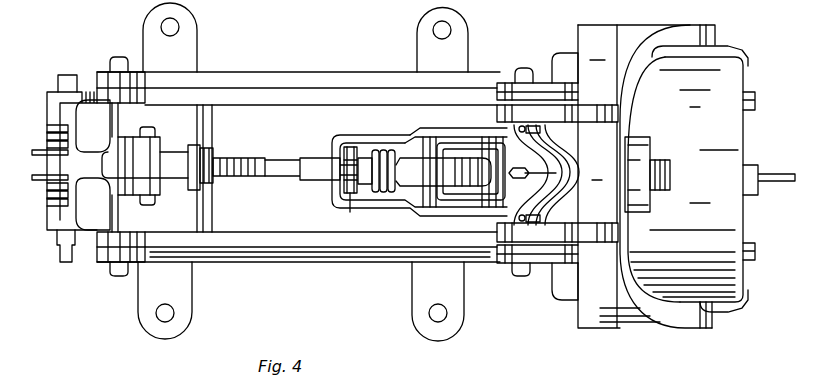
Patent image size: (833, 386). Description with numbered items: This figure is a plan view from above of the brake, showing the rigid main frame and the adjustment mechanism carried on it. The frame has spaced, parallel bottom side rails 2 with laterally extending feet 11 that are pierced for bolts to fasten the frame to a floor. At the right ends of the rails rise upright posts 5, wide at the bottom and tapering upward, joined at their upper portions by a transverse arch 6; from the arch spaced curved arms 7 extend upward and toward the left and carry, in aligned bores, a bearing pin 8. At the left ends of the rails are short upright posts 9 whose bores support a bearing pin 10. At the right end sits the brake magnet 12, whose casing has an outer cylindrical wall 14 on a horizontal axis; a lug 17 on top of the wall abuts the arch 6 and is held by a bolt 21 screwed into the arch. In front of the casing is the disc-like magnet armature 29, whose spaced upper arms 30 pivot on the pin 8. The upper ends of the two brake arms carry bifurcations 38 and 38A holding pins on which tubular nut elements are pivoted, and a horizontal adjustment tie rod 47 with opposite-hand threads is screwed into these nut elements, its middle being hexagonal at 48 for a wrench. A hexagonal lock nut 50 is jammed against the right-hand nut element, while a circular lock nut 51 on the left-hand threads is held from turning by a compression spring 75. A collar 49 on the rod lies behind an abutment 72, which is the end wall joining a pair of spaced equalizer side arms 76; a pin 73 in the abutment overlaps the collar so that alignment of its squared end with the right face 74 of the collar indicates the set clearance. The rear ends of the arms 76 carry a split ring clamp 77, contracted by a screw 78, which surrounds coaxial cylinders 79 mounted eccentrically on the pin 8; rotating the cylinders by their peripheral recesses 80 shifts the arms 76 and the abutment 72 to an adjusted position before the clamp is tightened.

The bottom side rails 2 is at (293, 72).
The upright posts 5 is at (690, 28).
The transverse arch 6 is at (630, 104).
The curved arms 7 is at (592, 113).
The bearing pin 8 is at (518, 272).
The short upright posts 9 is at (97, 70).
The bearing pin 10 is at (118, 57).
The feet 11 is at (197, 30).
The brake magnet 12 is at (755, 216).
The outer cylindrical wall 14 is at (733, 128).
The lug 17 is at (651, 148).
The bolt 21 is at (668, 168).
The magnet armature 29 is at (565, 300).
The spaced arms 30 is at (538, 93).
The bifurcations 38 is at (471, 173).
The bifurcations 38A is at (160, 145).
The adjustment tie rod 47 is at (300, 162).
The hexagonal portion 48 is at (278, 158).
The collar 49 is at (350, 211).
The lock nut 50 is at (210, 158).
The lock nut 51 is at (374, 149).
The abutment 72 is at (337, 175).
The pin 73 is at (350, 147).
The right face 74 is at (375, 150).
The compression spring 75 is at (400, 172).
The side arms 76 is at (462, 136).
The split ring clamp 77 is at (545, 160).
The screw 78 is at (530, 174).
The coaxial cylinders 79 is at (541, 130).
The peripheral recesses 80 is at (522, 130).